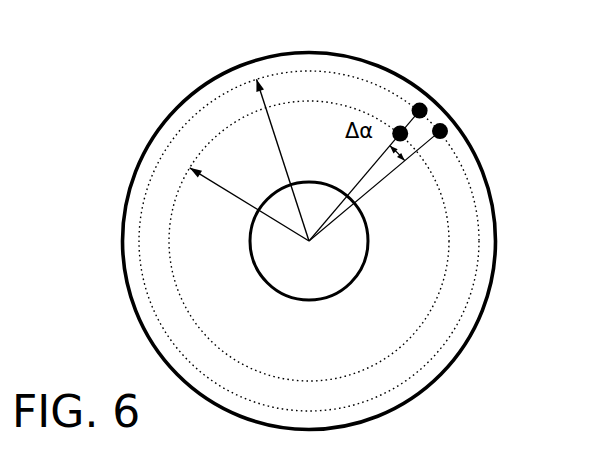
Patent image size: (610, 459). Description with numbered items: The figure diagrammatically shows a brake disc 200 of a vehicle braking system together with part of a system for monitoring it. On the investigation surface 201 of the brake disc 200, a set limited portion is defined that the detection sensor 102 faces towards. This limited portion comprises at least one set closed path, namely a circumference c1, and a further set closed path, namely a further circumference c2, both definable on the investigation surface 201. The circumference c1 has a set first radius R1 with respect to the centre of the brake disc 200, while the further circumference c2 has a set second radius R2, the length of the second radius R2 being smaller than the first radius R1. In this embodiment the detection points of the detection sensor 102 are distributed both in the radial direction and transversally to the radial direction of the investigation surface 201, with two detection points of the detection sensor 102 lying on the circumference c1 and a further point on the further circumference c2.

The brake disc 200 is at (133, 185).
The detection sensor 102 is at (400, 125).
The investigation surface 201 is at (375, 335).
The circumference c1 is at (478, 249).
The further circumference c2 is at (438, 298).
The set first radius R1 is at (282, 160).
The set second radius R2 is at (249, 204).